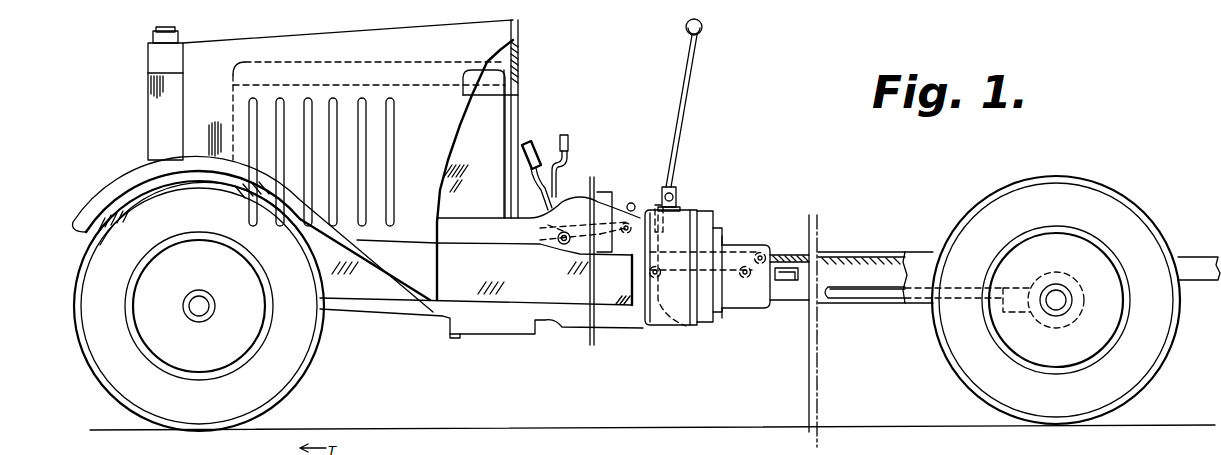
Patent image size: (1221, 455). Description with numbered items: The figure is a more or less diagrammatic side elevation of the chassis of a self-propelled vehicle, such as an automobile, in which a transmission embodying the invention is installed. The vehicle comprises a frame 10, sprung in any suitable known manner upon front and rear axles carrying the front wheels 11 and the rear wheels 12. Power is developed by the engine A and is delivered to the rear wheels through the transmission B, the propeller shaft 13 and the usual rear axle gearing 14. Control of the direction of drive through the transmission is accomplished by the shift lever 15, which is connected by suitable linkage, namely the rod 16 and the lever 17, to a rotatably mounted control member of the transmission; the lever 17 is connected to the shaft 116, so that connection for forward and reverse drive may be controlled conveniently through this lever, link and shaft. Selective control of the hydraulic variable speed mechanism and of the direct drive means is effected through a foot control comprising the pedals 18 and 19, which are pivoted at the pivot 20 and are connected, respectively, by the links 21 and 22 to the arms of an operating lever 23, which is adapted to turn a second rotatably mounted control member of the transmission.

The frame 10 is at (915, 258).
The front wheels 11 is at (298, 357).
The rear wheels 12 is at (1160, 356).
The propeller shaft 13 is at (874, 300).
The rear axle gearing 14 is at (1077, 307).
The shift lever 15 is at (679, 141).
The rod 16 is at (684, 326).
The lever 17 is at (750, 309).
The pedal 18 is at (560, 178).
The pedal 19 is at (527, 189).
The pivot 20 is at (562, 246).
The link 21 is at (603, 200).
The link 22 is at (612, 252).
The operating lever 23 is at (634, 206).
The shaft 116 is at (761, 252).
The engine A is at (490, 118).
The transmission B is at (702, 275).